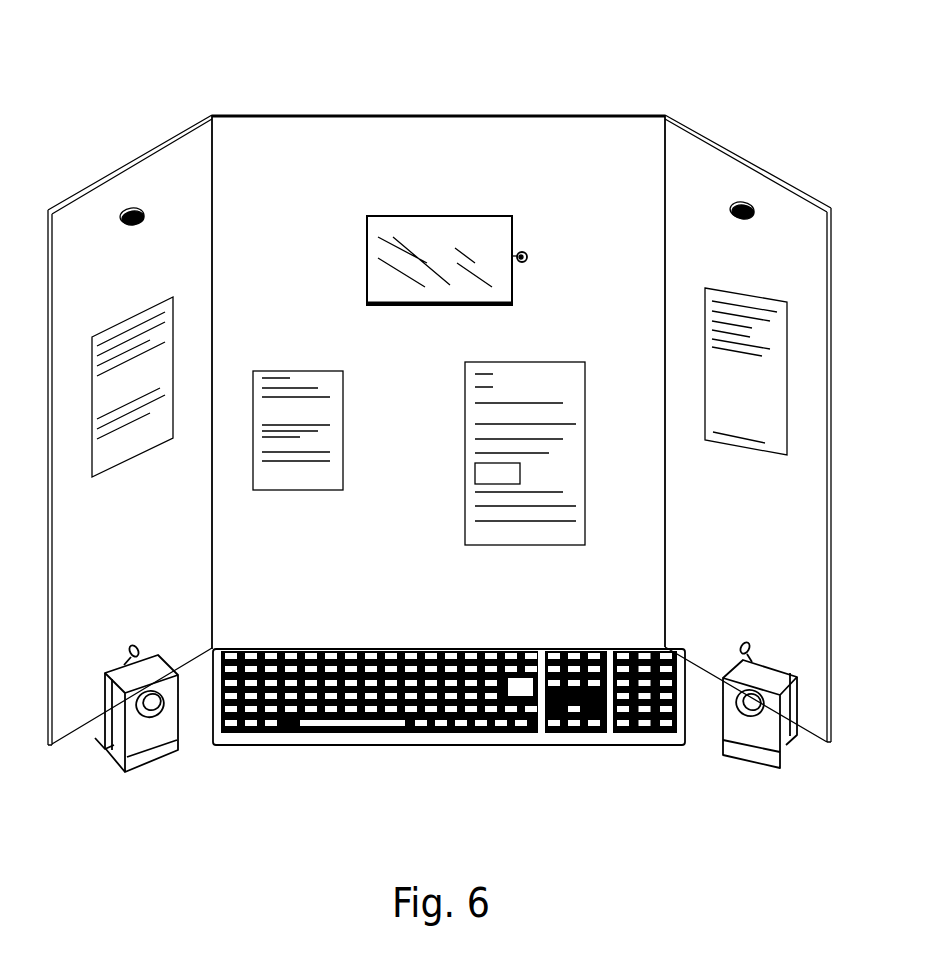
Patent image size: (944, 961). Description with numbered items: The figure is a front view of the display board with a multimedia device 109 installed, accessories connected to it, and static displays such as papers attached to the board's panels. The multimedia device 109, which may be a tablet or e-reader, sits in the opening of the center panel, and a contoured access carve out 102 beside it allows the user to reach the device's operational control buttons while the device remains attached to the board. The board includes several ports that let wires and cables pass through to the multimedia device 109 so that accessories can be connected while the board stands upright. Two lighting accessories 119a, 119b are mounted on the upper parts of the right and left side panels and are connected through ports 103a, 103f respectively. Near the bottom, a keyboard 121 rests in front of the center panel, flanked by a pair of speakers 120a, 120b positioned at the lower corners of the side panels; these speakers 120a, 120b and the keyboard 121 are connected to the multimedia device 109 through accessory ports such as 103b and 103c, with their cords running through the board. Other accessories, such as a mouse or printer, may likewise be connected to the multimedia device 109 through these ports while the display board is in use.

The contoured access carve out 102 is at (530, 253).
The multimedia device 109 is at (446, 260).
The lighting accessory 119a is at (752, 205).
The lighting accessory 119b is at (140, 209).
The port 103a is at (742, 193).
The accessory port 103b is at (757, 651).
The accessory port 103c is at (128, 656).
The port 103f is at (147, 211).
The speaker 120a is at (730, 728).
The speaker 120b is at (165, 730).
The keyboard 121 is at (447, 705).